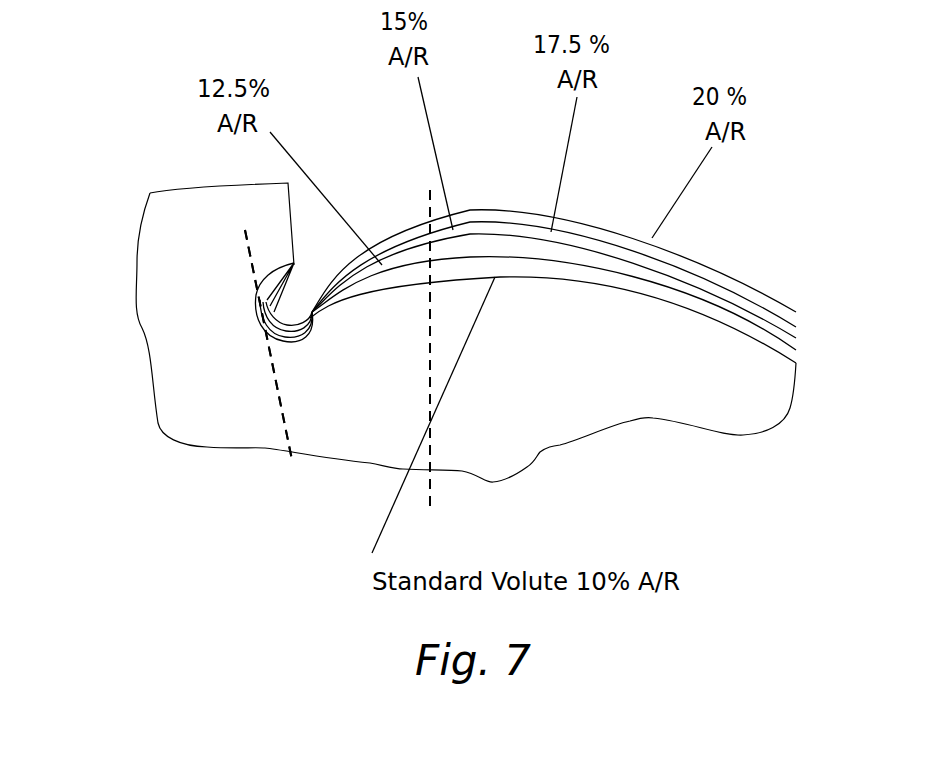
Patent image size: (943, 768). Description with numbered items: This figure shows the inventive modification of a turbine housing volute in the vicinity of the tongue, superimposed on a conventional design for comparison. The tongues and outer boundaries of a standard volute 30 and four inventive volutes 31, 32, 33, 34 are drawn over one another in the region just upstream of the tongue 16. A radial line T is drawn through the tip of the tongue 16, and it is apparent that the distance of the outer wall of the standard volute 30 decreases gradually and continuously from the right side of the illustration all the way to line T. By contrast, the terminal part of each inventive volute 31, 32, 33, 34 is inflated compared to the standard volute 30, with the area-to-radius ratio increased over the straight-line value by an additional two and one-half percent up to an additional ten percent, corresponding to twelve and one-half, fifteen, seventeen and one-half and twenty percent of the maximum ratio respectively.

The tongue 16 is at (283, 300).
The line T is at (273, 380).
The standard volute 30 is at (372, 293).
The inventive volute 31 is at (408, 258).
The inventive volute 32 is at (473, 240).
The inventive volute 33 is at (511, 235).
The inventive volute 34 is at (608, 227).